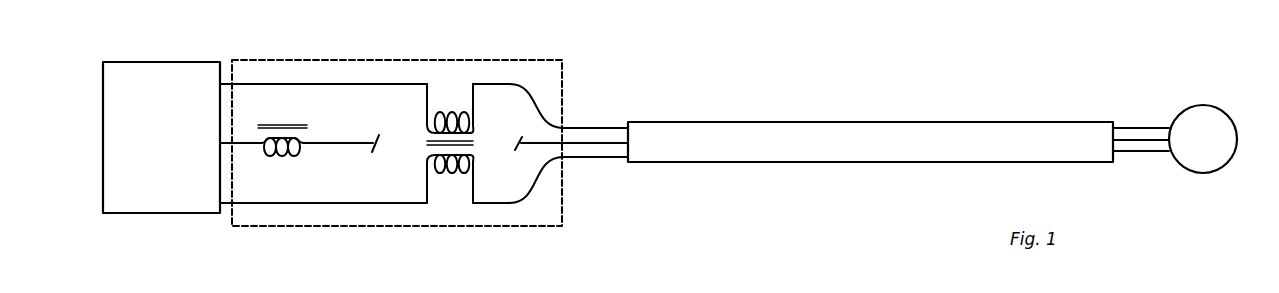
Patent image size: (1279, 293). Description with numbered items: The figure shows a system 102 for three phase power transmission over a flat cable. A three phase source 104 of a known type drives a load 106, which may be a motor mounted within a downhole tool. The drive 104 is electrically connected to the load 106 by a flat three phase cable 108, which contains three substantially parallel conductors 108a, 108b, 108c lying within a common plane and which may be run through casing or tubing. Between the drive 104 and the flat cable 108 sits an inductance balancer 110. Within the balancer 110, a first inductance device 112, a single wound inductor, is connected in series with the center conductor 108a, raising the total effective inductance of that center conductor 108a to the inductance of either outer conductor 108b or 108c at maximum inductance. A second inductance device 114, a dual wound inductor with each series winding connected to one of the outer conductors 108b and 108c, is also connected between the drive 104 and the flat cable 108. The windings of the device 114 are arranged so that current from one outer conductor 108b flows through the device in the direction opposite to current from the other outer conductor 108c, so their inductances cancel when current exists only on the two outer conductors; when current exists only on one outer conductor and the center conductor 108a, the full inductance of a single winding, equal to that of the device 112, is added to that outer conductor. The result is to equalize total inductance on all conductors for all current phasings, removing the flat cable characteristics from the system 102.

The system 102 is at (894, 238).
The three phase source 104 is at (167, 61).
The load 106 is at (1210, 105).
The flat three phase cable 108 is at (923, 121).
The center conductor 108a is at (610, 142).
The outer conductor 108b is at (588, 128).
The outer conductor 108c is at (592, 157).
The inductance balancer 110 is at (408, 59).
The first inductance device 112 is at (305, 140).
The second inductance device 114 is at (455, 110).